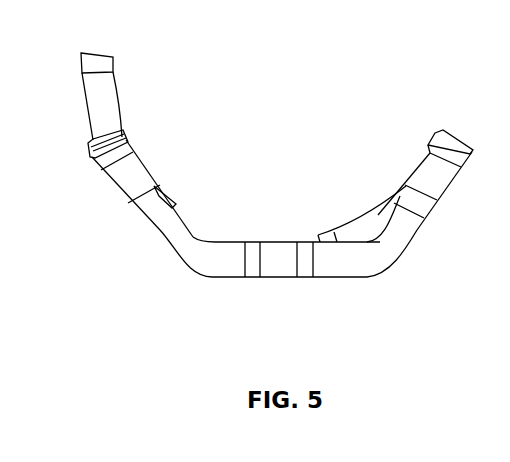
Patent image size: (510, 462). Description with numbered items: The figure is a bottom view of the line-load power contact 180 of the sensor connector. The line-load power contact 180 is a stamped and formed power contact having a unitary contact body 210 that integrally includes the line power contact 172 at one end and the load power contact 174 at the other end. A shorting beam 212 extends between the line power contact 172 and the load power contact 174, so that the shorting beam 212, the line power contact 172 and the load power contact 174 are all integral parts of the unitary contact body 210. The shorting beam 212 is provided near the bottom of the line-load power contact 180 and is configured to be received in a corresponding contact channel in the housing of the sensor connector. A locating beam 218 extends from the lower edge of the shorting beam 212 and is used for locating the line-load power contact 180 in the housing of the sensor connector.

The line-load power contact 180 is at (277, 184).
The load power contact 174 is at (119, 99).
The line power contact 172 is at (345, 205).
The unitary contact body 210 is at (235, 286).
The shorting beam 212 is at (225, 263).
The locating beam 218 is at (305, 292).